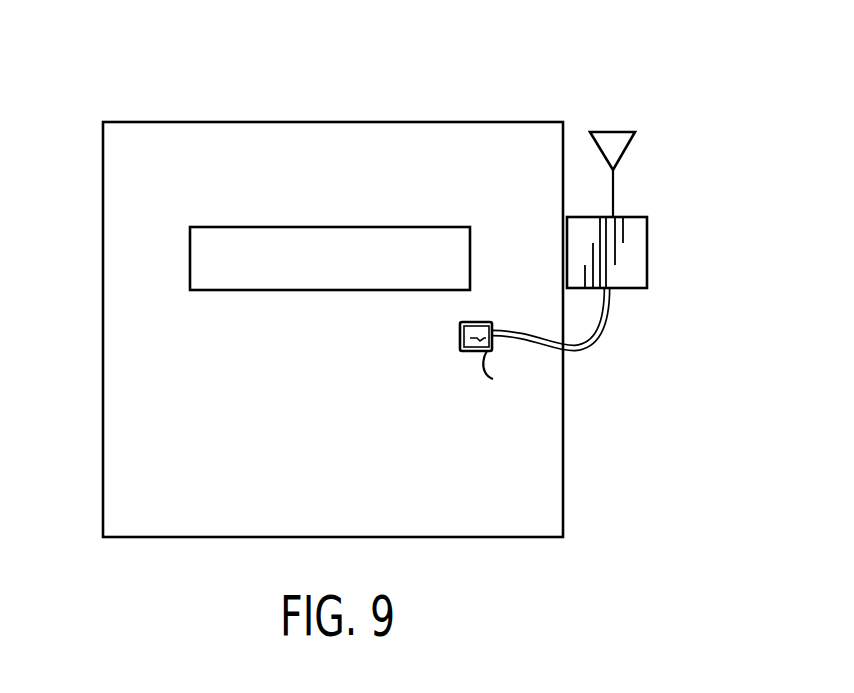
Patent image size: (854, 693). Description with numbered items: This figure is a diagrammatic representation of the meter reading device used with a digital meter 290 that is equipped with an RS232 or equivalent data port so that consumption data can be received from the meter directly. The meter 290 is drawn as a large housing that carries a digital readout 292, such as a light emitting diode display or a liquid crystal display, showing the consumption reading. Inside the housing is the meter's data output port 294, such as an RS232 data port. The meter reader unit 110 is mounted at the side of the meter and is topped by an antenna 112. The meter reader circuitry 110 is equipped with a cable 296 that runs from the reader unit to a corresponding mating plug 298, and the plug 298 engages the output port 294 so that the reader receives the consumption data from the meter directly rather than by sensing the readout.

The digital meter 290 is at (369, 121).
The digital readout 292 is at (190, 257).
The output port 294 is at (460, 333).
The cable 296 is at (598, 344).
The mating plug 298 is at (496, 381).
The meter reader unit 110 is at (647, 247).
The antenna 112 is at (635, 133).